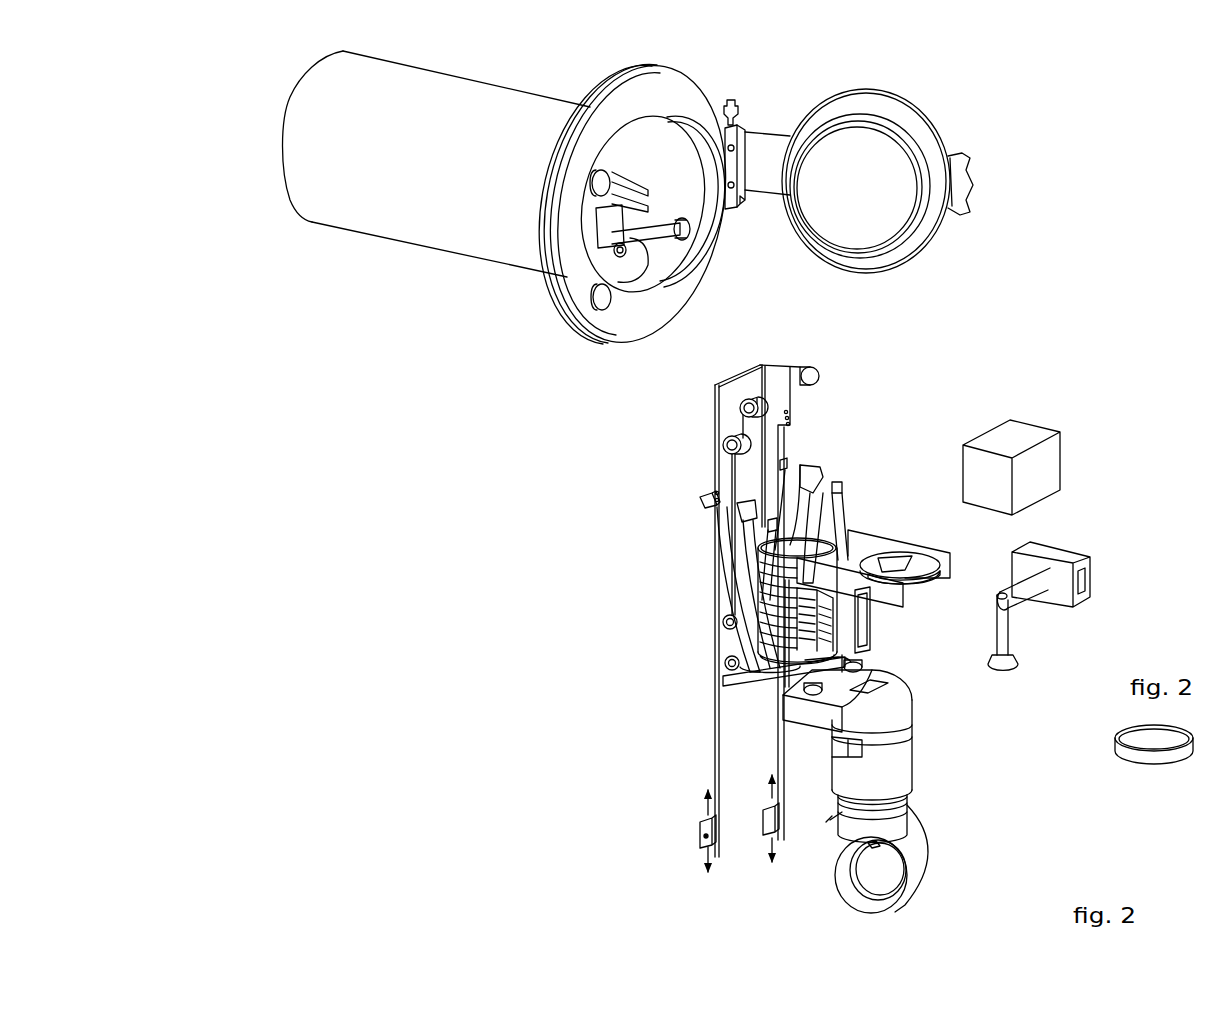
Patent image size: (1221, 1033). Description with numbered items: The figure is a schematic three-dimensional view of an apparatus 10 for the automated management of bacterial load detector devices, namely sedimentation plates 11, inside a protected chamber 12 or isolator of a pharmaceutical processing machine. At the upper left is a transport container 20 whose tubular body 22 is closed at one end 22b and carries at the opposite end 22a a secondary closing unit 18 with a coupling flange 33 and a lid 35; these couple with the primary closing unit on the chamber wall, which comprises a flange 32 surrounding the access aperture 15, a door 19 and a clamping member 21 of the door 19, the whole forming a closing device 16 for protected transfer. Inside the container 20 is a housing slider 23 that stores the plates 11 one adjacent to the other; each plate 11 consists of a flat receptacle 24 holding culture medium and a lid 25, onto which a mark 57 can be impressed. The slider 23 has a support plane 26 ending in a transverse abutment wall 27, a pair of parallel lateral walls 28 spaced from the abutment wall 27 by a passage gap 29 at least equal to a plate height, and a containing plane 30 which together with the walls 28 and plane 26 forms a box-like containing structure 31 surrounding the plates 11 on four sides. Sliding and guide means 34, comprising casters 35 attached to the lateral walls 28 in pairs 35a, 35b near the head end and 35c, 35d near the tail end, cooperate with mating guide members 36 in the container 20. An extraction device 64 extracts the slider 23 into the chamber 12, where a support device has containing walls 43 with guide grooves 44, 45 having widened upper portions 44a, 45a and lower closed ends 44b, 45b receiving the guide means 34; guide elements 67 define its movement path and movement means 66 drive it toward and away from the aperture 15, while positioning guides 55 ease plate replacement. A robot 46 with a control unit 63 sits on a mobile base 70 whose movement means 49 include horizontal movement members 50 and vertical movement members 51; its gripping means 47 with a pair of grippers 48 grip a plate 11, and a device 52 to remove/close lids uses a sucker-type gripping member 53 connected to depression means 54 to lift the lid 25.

The apparatus 10 is at (1062, 348).
The plate 11 is at (765, 680).
The protected chamber 12 is at (655, 313).
The access aperture 15 is at (650, 290).
The closing device 16 is at (605, 340).
The secondary closing unit 18 is at (558, 302).
The door 19 is at (907, 100).
The transport container 20 is at (397, 250).
The clamping member 21 is at (607, 237).
The tubular body 22 is at (422, 88).
The end 22a is at (572, 322).
The end 22b is at (274, 188).
The housing slider 23 is at (795, 448).
The receptacle 24 is at (925, 590).
The lid 25 is at (912, 557).
The support plane 26 is at (748, 470).
The abutment wall 27 is at (852, 663).
The lateral walls 28 is at (770, 425).
The passage gap 29 is at (776, 700).
The containing plane 30 is at (830, 655).
The box-like containing structure 31 is at (848, 582).
The flange 32 is at (690, 83).
The coupling flange 33 is at (621, 78).
The sliding and guide means 34 is at (724, 458).
The casters 35 is at (902, 202).
The caster 35a is at (726, 667).
The caster 35b is at (723, 624).
The caster 35c is at (738, 452).
The caster 35d is at (740, 418).
The guide members 36 is at (652, 162).
The containing walls 43 is at (733, 618).
The guide groove 44 is at (725, 600).
The widened portion 44a is at (812, 470).
The lower closed end 44b is at (725, 645).
The guide groove 45 is at (737, 680).
The widened portion 45a is at (838, 490).
The lower closed end 45b is at (735, 682).
The robot 46 is at (926, 766).
The gripping means 47 is at (868, 664).
The grippers 48 is at (770, 690).
The movement means 49 is at (835, 893).
The horizontal movement members 50 is at (905, 878).
The vertical movement members 51 is at (910, 752).
The device to remove/close lids 52 is at (1073, 545).
The gripping member 53 is at (1005, 665).
The depression means 54 is at (1030, 603).
The positioning guides 55 is at (950, 550).
The mark 57 is at (885, 560).
The control unit 63 is at (878, 686).
The extraction device 64 is at (1045, 462).
The movement means 66 is at (699, 833).
The guide elements 67 is at (713, 776).
The mobile base 70 is at (925, 803).